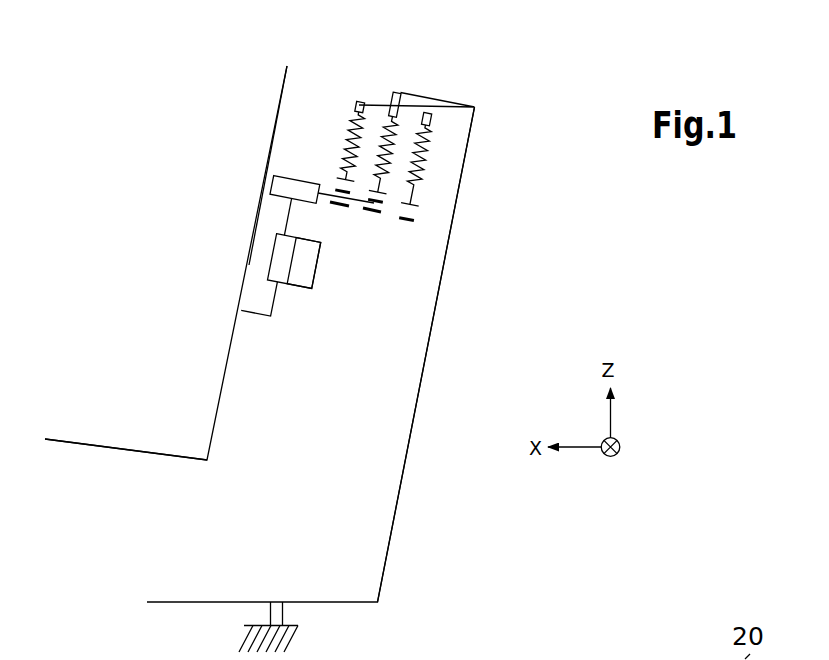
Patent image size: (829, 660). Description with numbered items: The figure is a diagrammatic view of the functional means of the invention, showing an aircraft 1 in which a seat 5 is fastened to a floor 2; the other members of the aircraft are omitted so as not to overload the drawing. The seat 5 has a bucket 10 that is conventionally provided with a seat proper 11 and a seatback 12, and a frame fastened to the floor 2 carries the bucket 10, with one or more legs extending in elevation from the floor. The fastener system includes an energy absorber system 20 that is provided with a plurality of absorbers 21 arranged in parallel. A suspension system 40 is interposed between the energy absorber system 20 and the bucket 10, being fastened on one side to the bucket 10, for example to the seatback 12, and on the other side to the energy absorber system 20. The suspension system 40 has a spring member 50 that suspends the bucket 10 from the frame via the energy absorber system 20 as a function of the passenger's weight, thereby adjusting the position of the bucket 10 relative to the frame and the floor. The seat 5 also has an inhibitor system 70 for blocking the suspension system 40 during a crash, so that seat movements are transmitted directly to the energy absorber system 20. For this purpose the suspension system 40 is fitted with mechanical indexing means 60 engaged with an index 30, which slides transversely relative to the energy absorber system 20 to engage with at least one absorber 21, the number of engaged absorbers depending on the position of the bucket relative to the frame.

The aircraft 1 is at (562, 246).
The floor 2 is at (280, 599).
The seat 5 is at (517, 139).
The bucket 10 is at (198, 112).
The seat proper 11 is at (138, 447).
The seatback 12 is at (276, 117).
The energy absorber system 20 is at (441, 112).
The absorbers 21 is at (423, 109).
The index 30 is at (352, 203).
The suspension system 40 is at (272, 216).
The spring member 50 is at (278, 245).
The mechanical indexing means 60 is at (290, 185).
The inhibitor system 70 is at (305, 268).